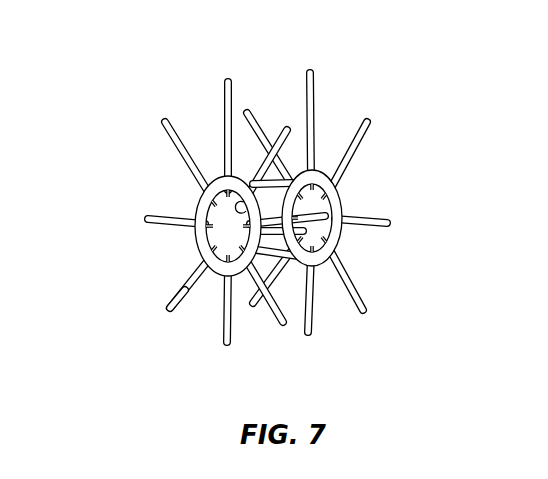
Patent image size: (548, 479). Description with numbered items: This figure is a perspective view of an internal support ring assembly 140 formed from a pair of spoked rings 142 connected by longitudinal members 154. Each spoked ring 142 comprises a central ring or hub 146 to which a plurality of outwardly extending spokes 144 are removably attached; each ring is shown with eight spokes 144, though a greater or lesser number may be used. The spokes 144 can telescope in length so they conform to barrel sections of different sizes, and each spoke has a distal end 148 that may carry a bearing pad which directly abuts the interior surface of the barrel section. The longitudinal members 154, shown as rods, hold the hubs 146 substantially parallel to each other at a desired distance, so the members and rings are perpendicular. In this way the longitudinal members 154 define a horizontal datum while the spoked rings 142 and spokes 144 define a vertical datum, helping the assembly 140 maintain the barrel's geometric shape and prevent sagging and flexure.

The internal support ring assembly 140 is at (110, 80).
The spoked ring 142 is at (251, 220).
The spokes 144 is at (158, 221).
The central ring or hub 146 is at (196, 210).
The distal end 148 is at (175, 284).
The longitudinal members 154 is at (272, 256).